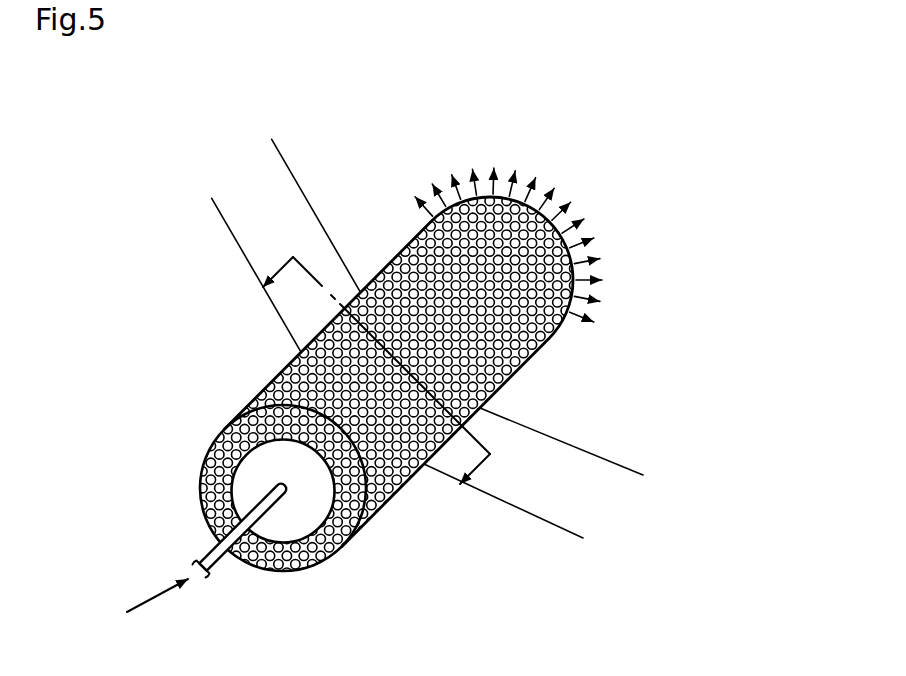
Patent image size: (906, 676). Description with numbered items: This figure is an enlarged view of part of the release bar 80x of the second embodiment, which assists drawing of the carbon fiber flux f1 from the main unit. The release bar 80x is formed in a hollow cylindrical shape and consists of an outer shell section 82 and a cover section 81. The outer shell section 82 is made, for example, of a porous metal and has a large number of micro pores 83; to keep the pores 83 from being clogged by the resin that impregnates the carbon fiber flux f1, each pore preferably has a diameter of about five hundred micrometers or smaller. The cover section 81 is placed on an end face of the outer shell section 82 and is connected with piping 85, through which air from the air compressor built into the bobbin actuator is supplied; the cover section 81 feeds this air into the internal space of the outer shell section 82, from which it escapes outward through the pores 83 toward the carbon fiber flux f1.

The release bar 80x is at (373, 194).
The cover section 81 is at (285, 568).
The outer shell section 82 is at (328, 557).
The pores 83 is at (535, 343).
The piping 85 is at (233, 562).
The carbon fiber flux f1 is at (643, 475).